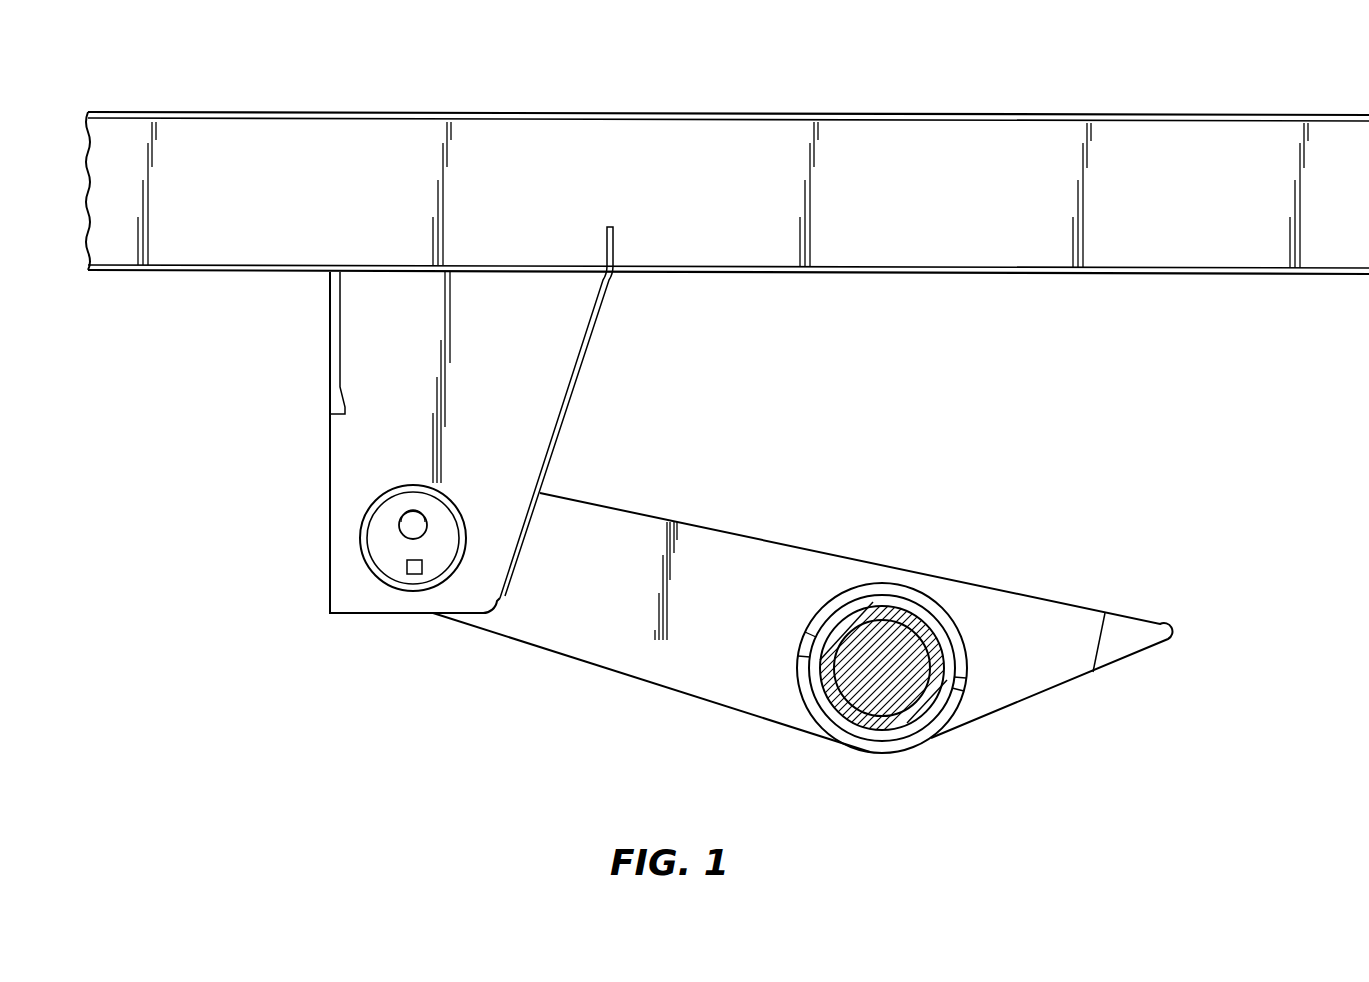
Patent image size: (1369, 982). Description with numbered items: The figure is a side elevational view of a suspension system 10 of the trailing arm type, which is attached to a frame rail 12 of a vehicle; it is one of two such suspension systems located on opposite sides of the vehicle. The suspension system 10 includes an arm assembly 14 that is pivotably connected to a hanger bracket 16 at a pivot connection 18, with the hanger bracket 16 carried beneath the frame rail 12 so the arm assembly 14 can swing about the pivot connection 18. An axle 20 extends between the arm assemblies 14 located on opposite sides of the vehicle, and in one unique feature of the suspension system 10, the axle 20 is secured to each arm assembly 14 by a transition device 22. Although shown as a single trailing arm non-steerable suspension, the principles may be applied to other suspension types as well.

The suspension system 10 is at (313, 730).
The frame rail 12 is at (782, 114).
The arm assembly 14 is at (812, 542).
The hanger bracket 16 is at (330, 487).
The pivot connection 18 is at (400, 533).
The axle 20 is at (912, 722).
The transition device 22 is at (948, 603).